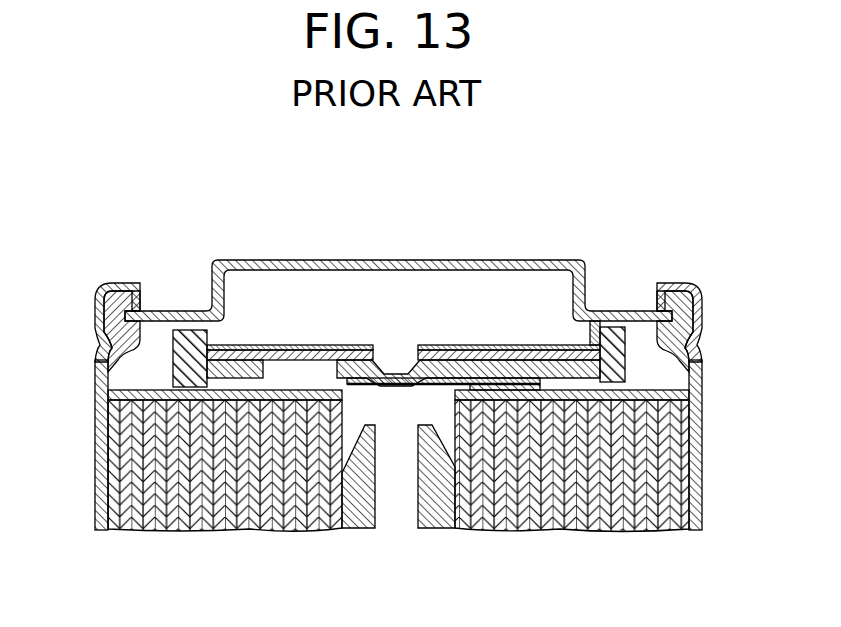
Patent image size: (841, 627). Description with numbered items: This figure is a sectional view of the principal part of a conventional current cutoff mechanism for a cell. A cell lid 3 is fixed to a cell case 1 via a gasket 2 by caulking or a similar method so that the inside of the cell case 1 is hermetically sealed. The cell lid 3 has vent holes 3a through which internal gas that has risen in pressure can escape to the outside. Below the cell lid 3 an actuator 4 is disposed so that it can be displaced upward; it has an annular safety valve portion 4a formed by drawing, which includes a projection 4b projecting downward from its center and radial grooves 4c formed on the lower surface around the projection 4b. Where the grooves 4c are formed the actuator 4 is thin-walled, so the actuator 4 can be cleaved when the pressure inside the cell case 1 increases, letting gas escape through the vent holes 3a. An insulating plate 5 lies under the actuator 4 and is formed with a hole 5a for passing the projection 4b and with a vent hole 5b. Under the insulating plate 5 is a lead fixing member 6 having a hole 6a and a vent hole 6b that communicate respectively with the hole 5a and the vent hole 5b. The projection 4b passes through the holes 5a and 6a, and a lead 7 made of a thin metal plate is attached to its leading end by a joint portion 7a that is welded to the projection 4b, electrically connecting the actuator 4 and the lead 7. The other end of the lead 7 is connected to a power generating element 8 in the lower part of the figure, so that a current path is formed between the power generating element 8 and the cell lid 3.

The cell case 1 is at (697, 455).
The gasket 2 is at (700, 313).
The cell lid 3 is at (545, 256).
The vent holes 3a is at (208, 285).
The actuator 4 is at (362, 330).
The safety valve portion 4a is at (482, 350).
The projection 4b is at (373, 386).
The radial grooves 4c is at (300, 347).
The insulating plate 5 is at (170, 358).
The hole 5a is at (422, 355).
The vent hole 5b is at (334, 347).
The lead fixing member 6 is at (512, 357).
The hole 6a is at (402, 353).
The vent hole 6b is at (260, 345).
The lead 7 is at (430, 398).
The joint portion 7a is at (400, 384).
The power generating element 8 is at (408, 470).